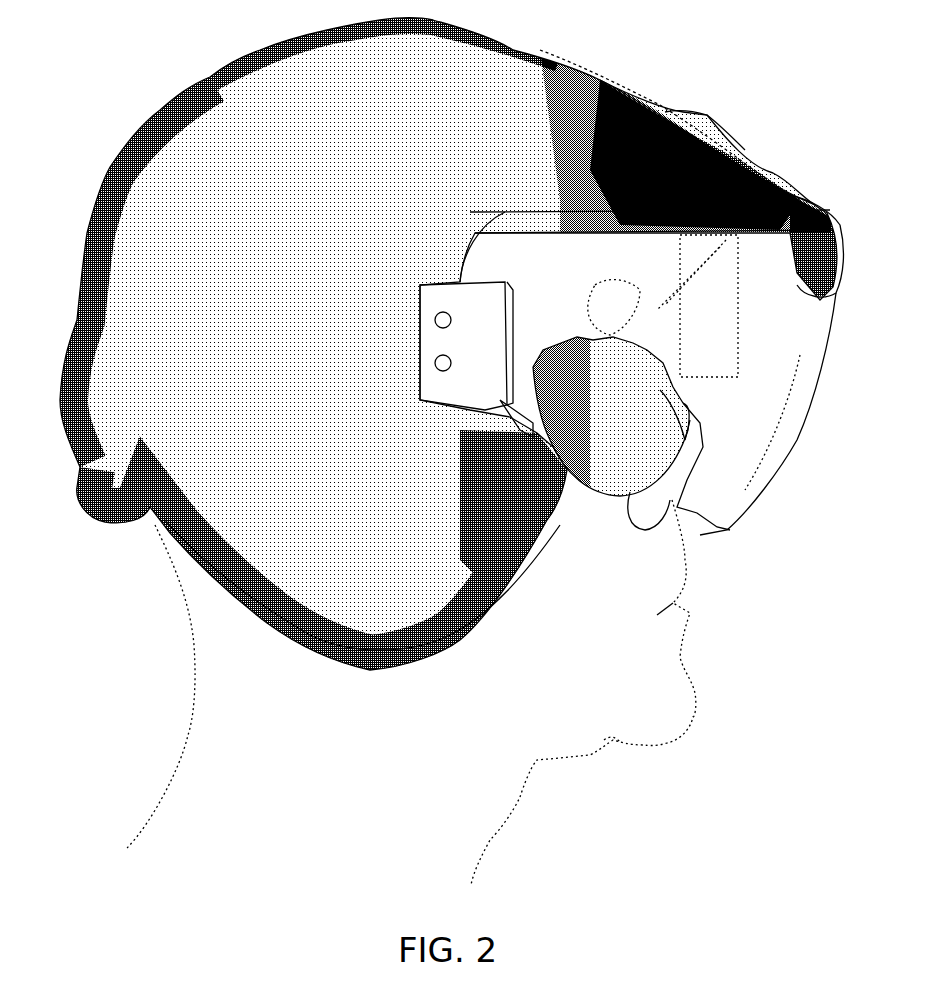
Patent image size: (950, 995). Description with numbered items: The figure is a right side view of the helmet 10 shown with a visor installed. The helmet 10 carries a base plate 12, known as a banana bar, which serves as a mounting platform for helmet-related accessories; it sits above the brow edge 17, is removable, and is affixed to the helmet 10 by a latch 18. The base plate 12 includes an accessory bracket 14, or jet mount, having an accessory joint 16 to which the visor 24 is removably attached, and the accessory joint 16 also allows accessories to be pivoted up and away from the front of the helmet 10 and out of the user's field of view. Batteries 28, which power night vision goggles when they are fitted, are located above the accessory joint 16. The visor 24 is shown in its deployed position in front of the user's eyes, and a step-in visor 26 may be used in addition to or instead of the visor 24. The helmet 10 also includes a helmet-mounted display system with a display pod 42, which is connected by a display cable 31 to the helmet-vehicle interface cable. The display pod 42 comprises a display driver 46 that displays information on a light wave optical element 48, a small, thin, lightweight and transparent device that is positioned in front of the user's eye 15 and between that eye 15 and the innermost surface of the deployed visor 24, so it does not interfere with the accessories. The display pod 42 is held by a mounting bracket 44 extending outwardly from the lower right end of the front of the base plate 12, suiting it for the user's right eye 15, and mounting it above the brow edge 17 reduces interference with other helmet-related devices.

The helmet 10 is at (190, 66).
The base plate 12 is at (568, 102).
The accessory bracket 14 is at (722, 100).
The eye 15 is at (585, 400).
The accessory joint 16 is at (797, 202).
The brow edge 17 is at (597, 288).
The latch 18 is at (573, 190).
The visor 24 is at (800, 440).
The step-in visor 26 is at (622, 495).
The batteries 28 is at (680, 116).
The display cable 31 is at (613, 73).
The display pod 42 is at (736, 342).
The mounting bracket 44 is at (680, 172).
The display driver 46 is at (742, 296).
The light wave optical element 48 is at (700, 420).